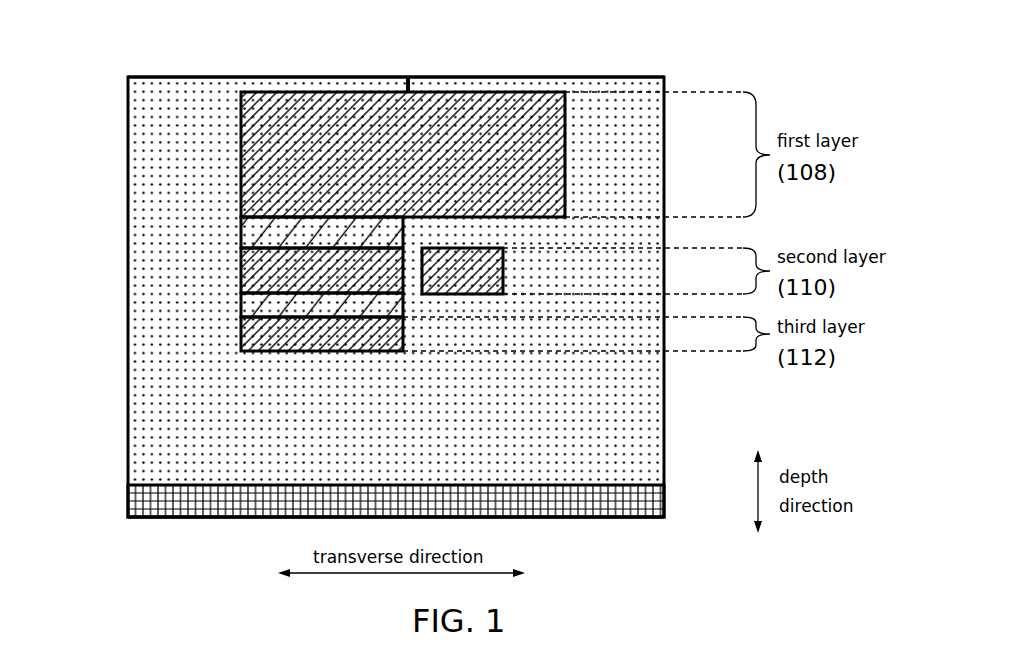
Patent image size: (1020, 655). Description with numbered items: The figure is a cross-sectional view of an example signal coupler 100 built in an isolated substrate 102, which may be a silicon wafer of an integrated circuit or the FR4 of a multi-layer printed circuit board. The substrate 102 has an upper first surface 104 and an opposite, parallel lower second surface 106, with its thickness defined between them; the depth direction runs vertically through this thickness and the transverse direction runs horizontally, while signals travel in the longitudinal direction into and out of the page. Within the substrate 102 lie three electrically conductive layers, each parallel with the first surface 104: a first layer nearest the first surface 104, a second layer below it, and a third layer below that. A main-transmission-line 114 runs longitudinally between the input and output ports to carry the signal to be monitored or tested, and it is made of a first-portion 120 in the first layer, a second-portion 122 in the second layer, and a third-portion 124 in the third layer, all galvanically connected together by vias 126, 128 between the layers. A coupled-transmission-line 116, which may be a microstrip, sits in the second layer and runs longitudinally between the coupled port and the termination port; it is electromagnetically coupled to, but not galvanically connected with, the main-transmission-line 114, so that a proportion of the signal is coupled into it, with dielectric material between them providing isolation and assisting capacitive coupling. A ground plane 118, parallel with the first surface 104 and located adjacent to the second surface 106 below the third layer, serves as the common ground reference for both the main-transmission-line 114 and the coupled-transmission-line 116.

The signal coupler 100 is at (614, 66).
The isolated substrate 102 is at (140, 110).
The first surface 104 is at (178, 77).
The second surface 106 is at (153, 518).
The main-transmission-line 114 is at (408, 77).
The coupled-transmission-line 116 is at (483, 294).
The ground plane 118 is at (128, 497).
The first-portion 120 is at (240, 168).
The second-portion 122 is at (240, 271).
The third-portion 124 is at (240, 335).
The via 126 is at (240, 233).
The via 128 is at (240, 308).